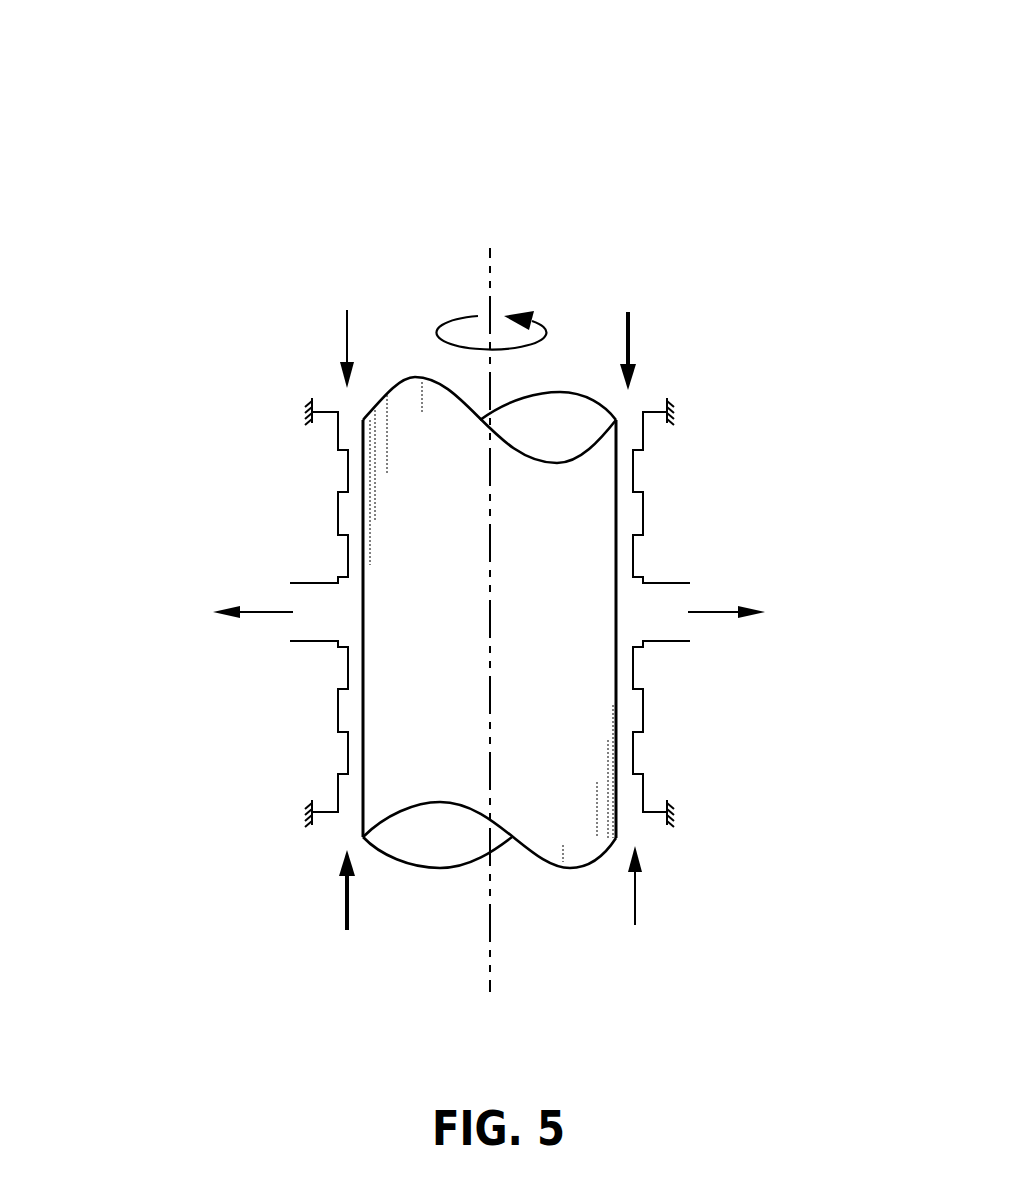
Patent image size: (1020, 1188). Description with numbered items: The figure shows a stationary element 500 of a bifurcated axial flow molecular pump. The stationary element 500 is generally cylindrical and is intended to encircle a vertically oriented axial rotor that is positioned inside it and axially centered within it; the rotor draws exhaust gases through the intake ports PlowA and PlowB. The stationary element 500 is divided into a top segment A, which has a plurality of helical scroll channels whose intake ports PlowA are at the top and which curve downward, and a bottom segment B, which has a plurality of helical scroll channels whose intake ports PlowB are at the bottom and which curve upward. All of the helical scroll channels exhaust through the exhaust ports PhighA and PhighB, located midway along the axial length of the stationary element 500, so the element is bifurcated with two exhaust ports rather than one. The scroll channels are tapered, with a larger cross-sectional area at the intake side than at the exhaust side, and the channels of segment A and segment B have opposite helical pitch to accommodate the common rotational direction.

The stationary element 500 is at (381, 432).
The segment A is at (245, 408).
The segment B is at (253, 637).
The intake ports Plow A PlowA is at (481, 324).
The intake ports Plow B PlowB is at (491, 910).
The exhaust port Phigh A PhighA is at (196, 610).
The exhaust port Phigh B PhighB is at (781, 615).